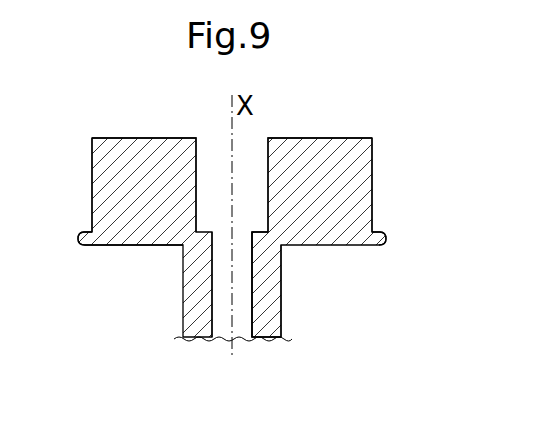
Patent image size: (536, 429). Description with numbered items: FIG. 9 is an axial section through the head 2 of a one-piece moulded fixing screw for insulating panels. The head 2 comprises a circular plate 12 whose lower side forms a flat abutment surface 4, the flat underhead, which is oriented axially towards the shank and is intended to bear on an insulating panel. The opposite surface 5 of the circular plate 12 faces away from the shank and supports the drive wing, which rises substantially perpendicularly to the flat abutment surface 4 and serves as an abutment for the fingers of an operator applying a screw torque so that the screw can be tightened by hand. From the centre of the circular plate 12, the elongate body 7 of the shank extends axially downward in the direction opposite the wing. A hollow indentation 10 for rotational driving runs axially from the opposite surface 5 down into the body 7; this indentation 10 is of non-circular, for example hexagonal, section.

The head 2 is at (388, 96).
The flat abutment surface 4 is at (120, 246).
The opposite surface 5 is at (88, 231).
The elongate body 7 is at (269, 288).
The hollow indentation 10 is at (252, 312).
The circular plate 12 is at (380, 240).